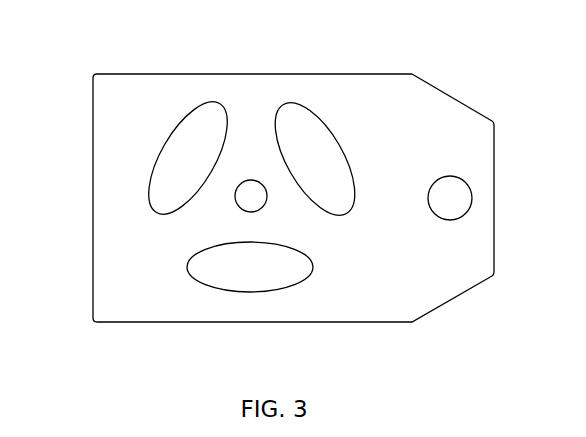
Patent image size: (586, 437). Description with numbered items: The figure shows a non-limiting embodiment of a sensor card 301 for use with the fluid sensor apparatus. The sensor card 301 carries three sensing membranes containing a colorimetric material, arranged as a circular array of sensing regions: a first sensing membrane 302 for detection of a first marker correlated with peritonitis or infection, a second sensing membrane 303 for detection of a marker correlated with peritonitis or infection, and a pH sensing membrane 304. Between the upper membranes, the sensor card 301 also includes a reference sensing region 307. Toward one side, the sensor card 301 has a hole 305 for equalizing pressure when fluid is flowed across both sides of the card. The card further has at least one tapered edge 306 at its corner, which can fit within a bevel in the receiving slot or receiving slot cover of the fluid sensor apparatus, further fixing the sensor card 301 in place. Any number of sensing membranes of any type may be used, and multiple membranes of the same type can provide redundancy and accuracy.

The sensor card 301 is at (93, 198).
The first sensing membrane 302 is at (200, 122).
The second sensing membrane 303 is at (307, 135).
The pH sensing membrane 304 is at (268, 280).
The hole 305 is at (458, 207).
The tapered edge 306 is at (462, 103).
The reference sensing region 307 is at (240, 202).